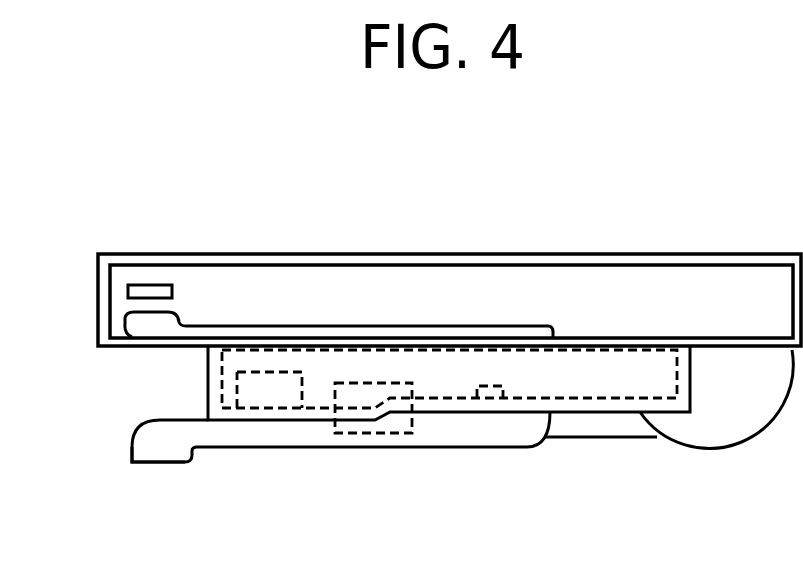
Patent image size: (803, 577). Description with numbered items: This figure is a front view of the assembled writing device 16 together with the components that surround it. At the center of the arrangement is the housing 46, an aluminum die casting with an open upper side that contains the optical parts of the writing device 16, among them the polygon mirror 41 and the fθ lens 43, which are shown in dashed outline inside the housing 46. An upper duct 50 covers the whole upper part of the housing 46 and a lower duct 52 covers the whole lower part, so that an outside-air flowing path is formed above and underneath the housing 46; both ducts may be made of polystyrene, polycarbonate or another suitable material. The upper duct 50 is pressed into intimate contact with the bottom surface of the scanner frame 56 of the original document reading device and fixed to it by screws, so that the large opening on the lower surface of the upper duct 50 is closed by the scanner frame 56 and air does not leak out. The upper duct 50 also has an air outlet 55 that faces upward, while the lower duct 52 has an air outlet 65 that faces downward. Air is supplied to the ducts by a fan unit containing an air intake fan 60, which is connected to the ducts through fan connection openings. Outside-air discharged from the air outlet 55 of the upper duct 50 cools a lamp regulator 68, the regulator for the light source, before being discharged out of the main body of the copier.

The writing device 16 is at (208, 377).
The polygon mirror 41 is at (375, 383).
The fθ lens 43 is at (489, 385).
The housing 46 is at (590, 405).
The upper duct 50 is at (297, 318).
The lower duct 52 is at (302, 452).
The air outlet 55 is at (145, 311).
The scanner frame 56 is at (752, 262).
The air intake fan 60 is at (732, 405).
The air outlet 65 is at (155, 465).
The lamp regulator 68 is at (156, 285).